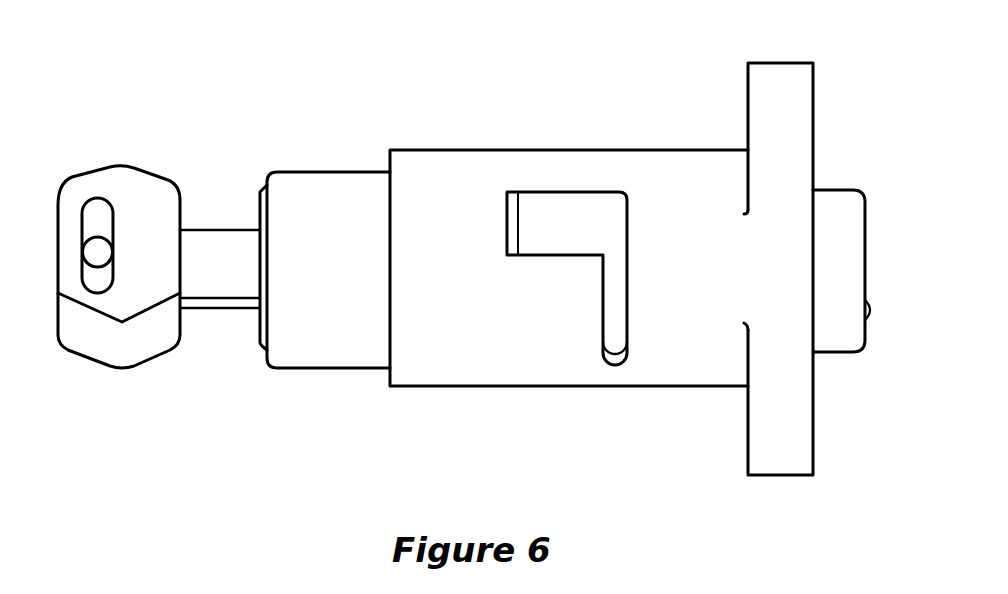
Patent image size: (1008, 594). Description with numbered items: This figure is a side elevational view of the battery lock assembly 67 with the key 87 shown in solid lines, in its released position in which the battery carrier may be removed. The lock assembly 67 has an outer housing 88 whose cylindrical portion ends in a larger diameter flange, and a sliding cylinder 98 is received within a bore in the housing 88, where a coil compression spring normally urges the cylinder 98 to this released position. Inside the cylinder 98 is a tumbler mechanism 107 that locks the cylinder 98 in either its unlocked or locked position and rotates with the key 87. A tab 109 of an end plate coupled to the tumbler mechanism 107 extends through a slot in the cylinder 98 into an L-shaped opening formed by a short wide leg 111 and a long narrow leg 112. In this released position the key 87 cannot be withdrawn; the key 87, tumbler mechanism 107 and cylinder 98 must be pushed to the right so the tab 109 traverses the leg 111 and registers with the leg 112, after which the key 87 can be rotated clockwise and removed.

The lock assembly 67 is at (585, 112).
The key 87 is at (148, 192).
The tumbler mechanism 107 is at (258, 340).
The sliding cylinder 98 is at (338, 370).
The outer housing 88 is at (565, 377).
The tab 109 is at (512, 231).
The short wide leg 111 is at (553, 250).
The long narrow leg 112 is at (617, 302).